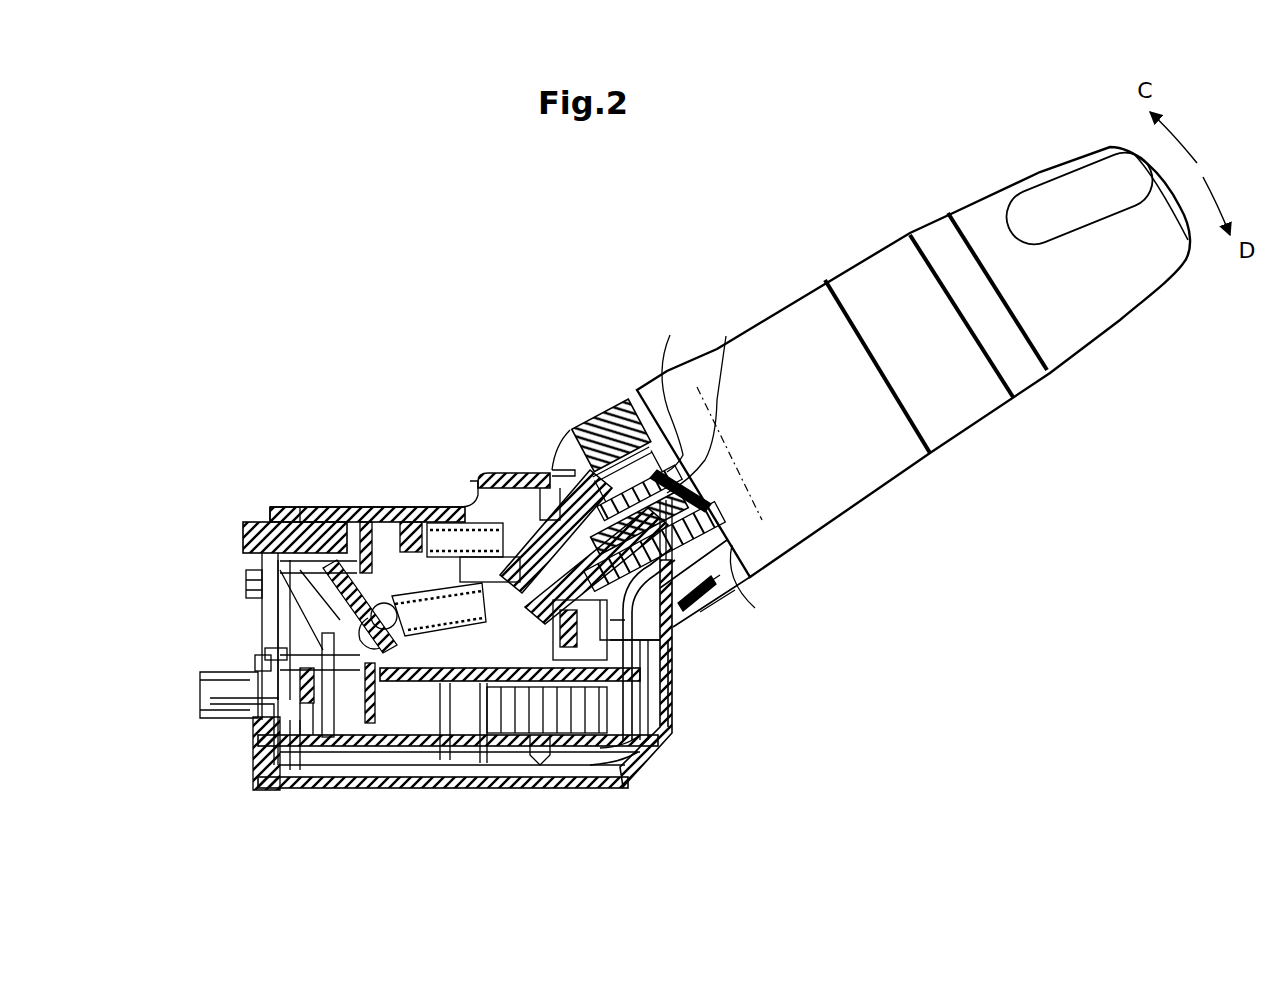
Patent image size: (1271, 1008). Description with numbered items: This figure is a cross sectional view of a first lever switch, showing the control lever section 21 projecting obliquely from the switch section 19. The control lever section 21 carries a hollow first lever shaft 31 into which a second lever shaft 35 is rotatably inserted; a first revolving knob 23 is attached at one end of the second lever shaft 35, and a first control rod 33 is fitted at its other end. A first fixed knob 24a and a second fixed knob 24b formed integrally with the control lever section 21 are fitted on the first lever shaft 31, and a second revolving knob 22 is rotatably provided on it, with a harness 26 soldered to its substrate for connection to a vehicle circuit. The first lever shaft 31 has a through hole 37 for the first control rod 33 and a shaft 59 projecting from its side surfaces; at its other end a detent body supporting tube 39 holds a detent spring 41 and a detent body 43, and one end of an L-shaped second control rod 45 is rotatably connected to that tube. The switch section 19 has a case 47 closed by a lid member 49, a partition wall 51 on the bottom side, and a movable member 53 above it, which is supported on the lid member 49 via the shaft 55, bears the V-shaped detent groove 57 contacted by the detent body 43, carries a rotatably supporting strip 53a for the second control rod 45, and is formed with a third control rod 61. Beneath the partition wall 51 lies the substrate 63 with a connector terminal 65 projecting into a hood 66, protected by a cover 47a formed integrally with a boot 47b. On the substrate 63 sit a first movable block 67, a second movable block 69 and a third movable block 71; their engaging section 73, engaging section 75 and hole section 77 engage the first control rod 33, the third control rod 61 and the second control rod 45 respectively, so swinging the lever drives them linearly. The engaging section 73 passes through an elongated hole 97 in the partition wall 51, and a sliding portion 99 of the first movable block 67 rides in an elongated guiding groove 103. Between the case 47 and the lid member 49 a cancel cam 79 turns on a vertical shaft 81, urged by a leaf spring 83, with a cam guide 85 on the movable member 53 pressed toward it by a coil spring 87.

The switch section 19 is at (502, 460).
The control lever section 21 is at (852, 244).
The second revolving knob 22 is at (970, 420).
The first revolving knob 23 is at (992, 190).
The first fixed knob 24a is at (1027, 387).
The second fixed knob 24b is at (863, 487).
The harness 26 is at (722, 593).
The first lever shaft 31 is at (668, 388).
The first control rod 33 is at (677, 632).
The second lever shaft 35 is at (650, 447).
The through hole 37 is at (484, 473).
The detent body supporting tube 39 is at (458, 518).
The detent spring 41 is at (425, 588).
The detent body 43 is at (385, 530).
The second control rod 45 is at (418, 757).
The case 47 is at (262, 618).
The cover 47a is at (677, 727).
The boot 47b is at (730, 607).
The lid member 49 is at (527, 470).
The partition wall 51 is at (450, 762).
The movable member 53 is at (262, 627).
The rotatably supporting strip 53a is at (255, 662).
The shaft 55 is at (555, 470).
The detent groove 57 is at (250, 583).
The shaft 59 is at (602, 488).
The third control rod 61 is at (265, 656).
The substrate 63 is at (618, 781).
The connector terminal 65 is at (225, 717).
The hood 66 is at (212, 683).
The first movable block 67 is at (573, 783).
The second movable block 69 is at (350, 766).
The third movable block 71 is at (279, 772).
The engaging section 73 is at (670, 670).
The engaging section 75 is at (298, 767).
The hole section 77 is at (395, 762).
The cancel cam 79 is at (243, 537).
The vertical shaft 81 is at (350, 507).
The leaf spring 83 is at (300, 512).
The cam guide 85 is at (412, 520).
The coil spring 87 is at (462, 520).
The elongated hole 97 is at (640, 750).
The sliding portion 99 is at (490, 762).
The elongated guiding groove 103 is at (537, 766).